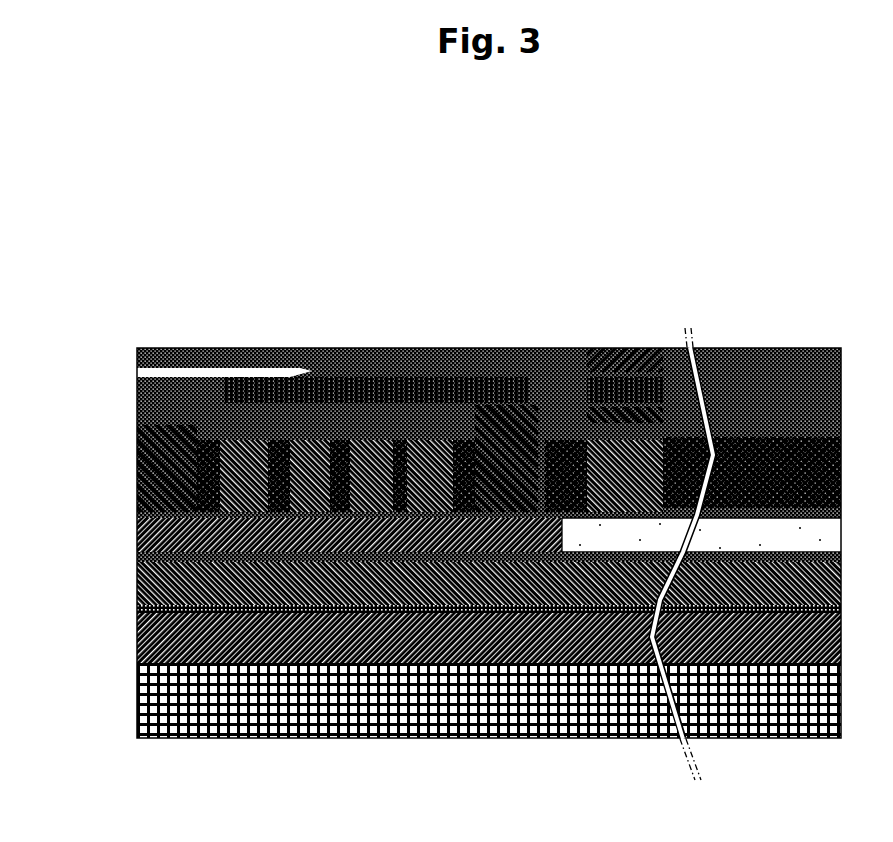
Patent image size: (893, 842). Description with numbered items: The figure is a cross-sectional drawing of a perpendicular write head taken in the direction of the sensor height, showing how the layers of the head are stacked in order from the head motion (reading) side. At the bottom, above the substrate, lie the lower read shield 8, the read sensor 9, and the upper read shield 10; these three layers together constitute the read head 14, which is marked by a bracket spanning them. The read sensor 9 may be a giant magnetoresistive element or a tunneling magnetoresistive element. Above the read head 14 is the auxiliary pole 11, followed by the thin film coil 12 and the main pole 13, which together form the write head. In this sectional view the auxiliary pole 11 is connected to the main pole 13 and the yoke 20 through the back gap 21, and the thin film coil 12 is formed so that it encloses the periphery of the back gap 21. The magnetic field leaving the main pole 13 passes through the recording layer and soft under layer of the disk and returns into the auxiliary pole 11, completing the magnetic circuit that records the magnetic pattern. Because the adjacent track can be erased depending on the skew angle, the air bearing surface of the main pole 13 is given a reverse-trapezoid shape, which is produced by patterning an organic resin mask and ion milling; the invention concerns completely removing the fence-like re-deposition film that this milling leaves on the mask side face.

The lower read shield 8 is at (469, 639).
The read sensor 9 is at (137, 608).
The upper read shield 10 is at (137, 580).
The auxiliary pole 11 is at (137, 530).
The thin film coil 12 is at (487, 348).
The main pole 13 is at (177, 350).
The read head 14 is at (445, 612).
The yoke 20 is at (340, 350).
The back gap 21 is at (555, 348).